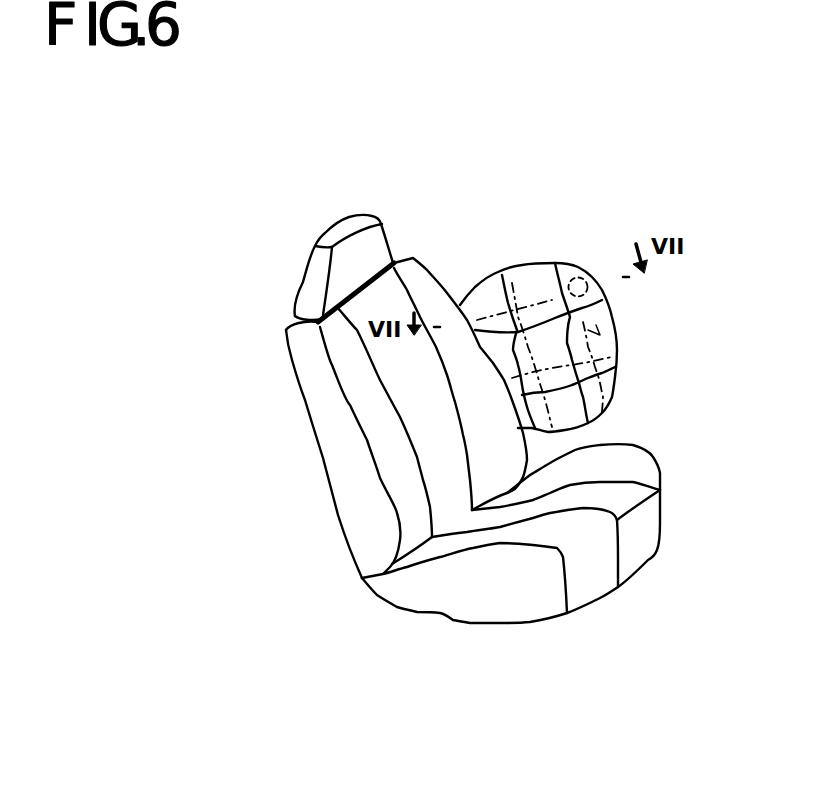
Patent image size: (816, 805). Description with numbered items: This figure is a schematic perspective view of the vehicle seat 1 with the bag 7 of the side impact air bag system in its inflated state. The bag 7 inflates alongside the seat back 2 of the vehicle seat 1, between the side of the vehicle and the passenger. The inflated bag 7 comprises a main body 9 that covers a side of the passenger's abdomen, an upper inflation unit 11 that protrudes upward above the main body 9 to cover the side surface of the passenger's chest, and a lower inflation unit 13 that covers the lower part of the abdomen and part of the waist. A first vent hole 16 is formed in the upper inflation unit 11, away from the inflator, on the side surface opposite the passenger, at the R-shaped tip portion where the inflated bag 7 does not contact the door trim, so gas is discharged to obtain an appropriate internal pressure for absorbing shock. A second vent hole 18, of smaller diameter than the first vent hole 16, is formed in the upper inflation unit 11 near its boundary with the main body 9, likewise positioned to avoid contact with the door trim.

The vehicle seat 1 is at (448, 632).
The seat back 2 is at (368, 442).
The bag 7 is at (532, 255).
The main body 9 is at (548, 374).
The upper inflation unit 11 is at (490, 290).
The lower inflation unit 13 is at (580, 417).
The first vent hole 16 is at (580, 277).
The second vent hole 18 is at (590, 330).